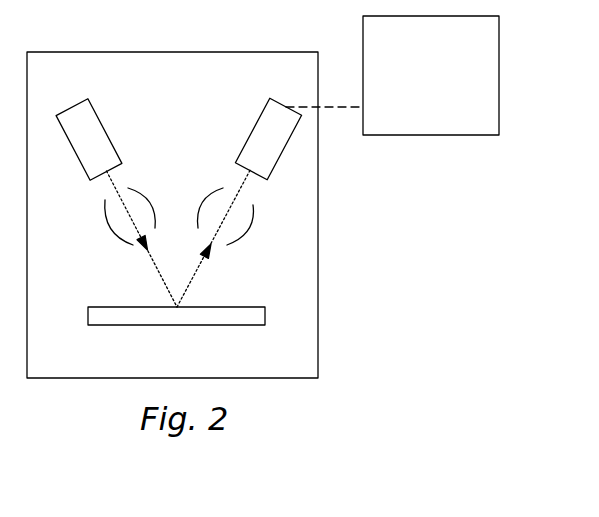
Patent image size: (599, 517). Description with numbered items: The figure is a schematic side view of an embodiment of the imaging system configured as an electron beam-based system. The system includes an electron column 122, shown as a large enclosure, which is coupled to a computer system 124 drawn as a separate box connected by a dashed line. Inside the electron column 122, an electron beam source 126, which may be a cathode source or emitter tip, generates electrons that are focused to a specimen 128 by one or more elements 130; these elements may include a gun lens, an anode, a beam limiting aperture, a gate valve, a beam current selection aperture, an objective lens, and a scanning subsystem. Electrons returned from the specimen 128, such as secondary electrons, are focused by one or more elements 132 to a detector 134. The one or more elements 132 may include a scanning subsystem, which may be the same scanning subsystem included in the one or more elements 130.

The electron column 122 is at (161, 52).
The computer system 124 is at (450, 113).
The electron beam source 126 is at (93, 112).
The specimen 128 is at (222, 307).
The one or more elements 130 is at (116, 233).
The one or more elements 132 is at (245, 232).
The detector 134 is at (262, 115).